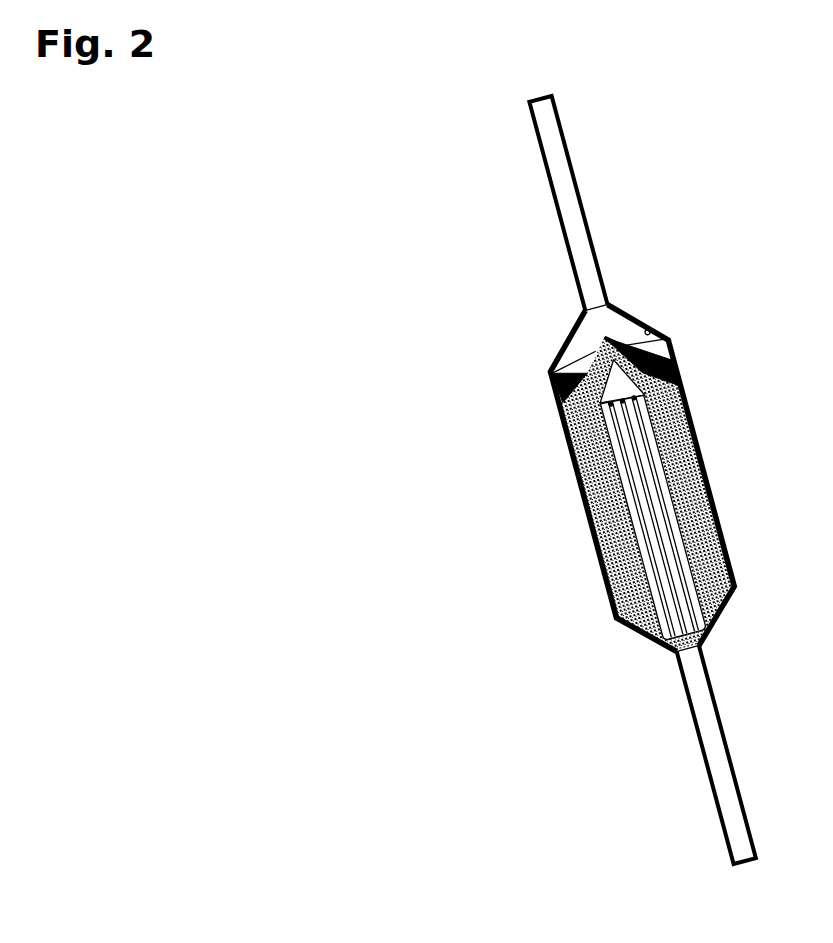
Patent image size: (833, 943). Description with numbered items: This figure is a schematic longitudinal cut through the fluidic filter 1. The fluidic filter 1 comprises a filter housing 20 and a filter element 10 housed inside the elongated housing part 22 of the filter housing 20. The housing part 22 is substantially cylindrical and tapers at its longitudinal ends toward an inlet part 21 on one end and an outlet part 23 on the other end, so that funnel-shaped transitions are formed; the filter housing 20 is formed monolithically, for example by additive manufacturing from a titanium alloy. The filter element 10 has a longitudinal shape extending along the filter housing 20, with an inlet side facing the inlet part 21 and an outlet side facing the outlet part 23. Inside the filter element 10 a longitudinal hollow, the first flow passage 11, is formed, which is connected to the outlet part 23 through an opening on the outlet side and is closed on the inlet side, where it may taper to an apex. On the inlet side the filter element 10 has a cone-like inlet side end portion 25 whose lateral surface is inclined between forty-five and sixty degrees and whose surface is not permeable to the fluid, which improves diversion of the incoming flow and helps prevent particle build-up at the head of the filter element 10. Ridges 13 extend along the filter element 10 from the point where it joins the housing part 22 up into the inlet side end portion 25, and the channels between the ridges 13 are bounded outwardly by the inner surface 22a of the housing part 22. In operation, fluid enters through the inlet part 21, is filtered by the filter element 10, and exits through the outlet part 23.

The fluidic filter 1 is at (385, 183).
The filter element 10 is at (588, 339).
The first flow passage 11 is at (645, 490).
The ridges 13 is at (617, 550).
The filter housing 20 is at (541, 586).
The inlet part 21 is at (600, 266).
The housing part 22 is at (677, 357).
The inner surface 22a is at (655, 330).
The outlet part 23 is at (713, 678).
The inlet side end portion 25 is at (550, 386).